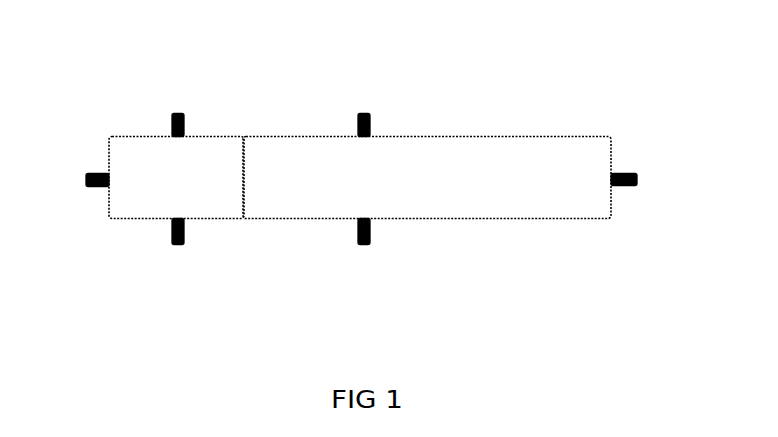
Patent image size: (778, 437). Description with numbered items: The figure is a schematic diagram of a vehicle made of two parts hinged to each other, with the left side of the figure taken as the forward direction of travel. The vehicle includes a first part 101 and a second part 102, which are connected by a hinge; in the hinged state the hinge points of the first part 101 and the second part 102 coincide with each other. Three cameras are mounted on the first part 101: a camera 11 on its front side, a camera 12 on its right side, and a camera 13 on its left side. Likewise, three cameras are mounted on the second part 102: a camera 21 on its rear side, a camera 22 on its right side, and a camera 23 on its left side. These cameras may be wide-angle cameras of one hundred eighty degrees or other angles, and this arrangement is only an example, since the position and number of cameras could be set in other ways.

The first part 101 is at (176, 178).
The second part 102 is at (427, 178).
The camera 11 is at (93, 188).
The camera 12 is at (182, 106).
The camera 13 is at (183, 247).
The camera 21 is at (625, 170).
The camera 22 is at (364, 106).
The camera 23 is at (364, 247).